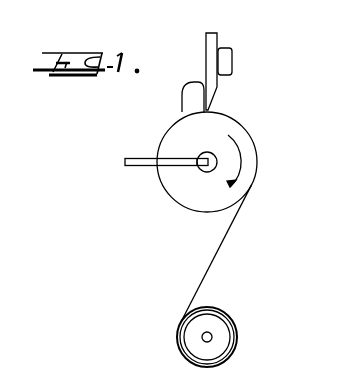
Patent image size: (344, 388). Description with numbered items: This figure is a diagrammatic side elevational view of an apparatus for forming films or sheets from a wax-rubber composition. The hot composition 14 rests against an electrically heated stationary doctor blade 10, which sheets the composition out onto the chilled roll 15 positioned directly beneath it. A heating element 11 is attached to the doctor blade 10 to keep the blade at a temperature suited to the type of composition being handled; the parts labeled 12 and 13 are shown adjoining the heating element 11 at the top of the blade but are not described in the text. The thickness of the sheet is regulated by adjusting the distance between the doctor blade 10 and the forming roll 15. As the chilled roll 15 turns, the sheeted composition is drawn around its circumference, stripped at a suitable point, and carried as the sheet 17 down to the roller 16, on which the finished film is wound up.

The doctor blade 10 is at (206, 52).
The heating element 11 is at (233, 63).
The blade edge 12 is at (225, 46).
The blade support 13 is at (227, 46).
The hot composition 14 is at (183, 98).
The chilled roll 15 is at (187, 182).
The roller 16 is at (194, 338).
The web 17 is at (220, 247).